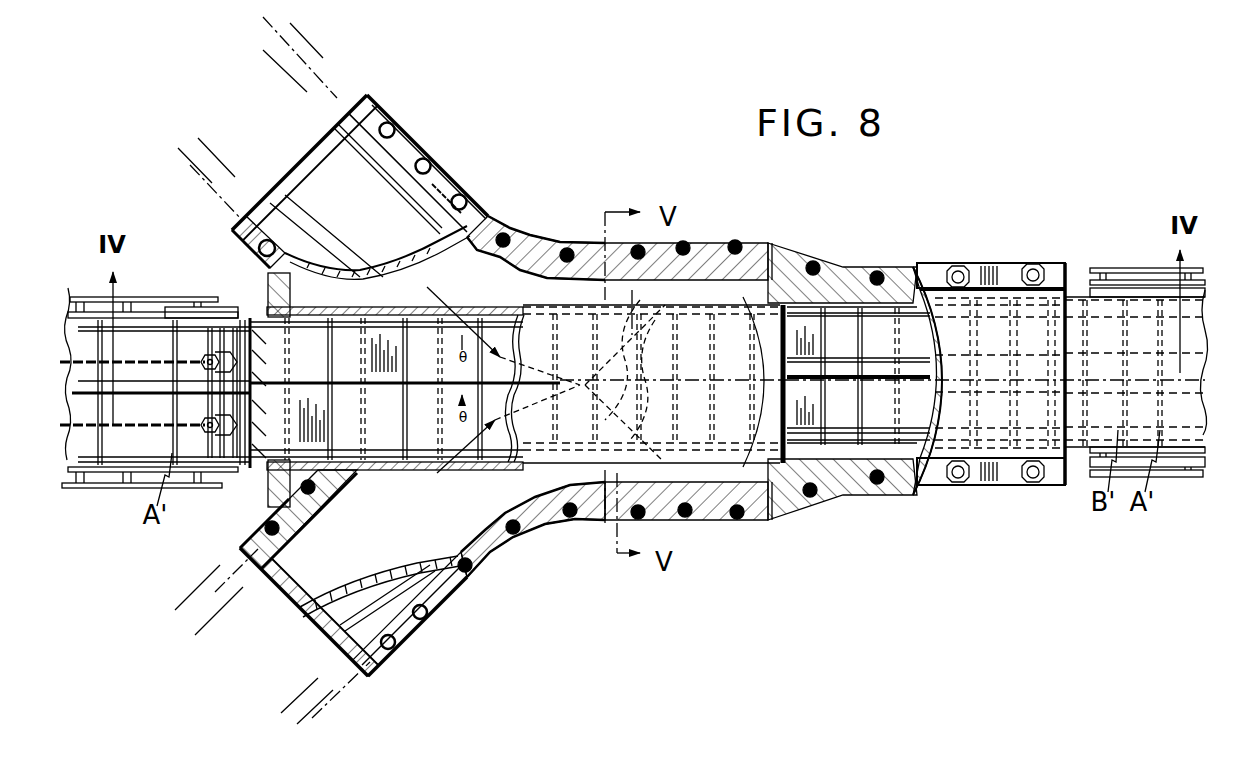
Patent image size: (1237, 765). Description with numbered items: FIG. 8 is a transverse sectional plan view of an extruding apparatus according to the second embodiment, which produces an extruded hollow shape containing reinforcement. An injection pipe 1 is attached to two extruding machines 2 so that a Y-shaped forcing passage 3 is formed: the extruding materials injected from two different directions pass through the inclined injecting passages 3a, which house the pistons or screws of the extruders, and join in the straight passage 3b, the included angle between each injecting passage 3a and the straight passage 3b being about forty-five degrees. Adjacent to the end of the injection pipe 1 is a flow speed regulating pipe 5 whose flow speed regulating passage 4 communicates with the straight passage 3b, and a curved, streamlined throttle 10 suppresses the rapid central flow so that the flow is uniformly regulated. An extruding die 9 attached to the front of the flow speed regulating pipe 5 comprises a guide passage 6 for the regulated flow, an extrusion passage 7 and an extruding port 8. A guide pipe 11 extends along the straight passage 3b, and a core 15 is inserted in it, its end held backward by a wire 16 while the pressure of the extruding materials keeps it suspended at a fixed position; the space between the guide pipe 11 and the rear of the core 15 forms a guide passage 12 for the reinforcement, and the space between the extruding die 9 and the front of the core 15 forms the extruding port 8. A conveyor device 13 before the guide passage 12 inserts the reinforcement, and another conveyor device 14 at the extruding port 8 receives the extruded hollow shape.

The injection pipe 1 is at (523, 236).
The extruding machine 2 is at (330, 65).
The forcing passage 3 is at (475, 228).
The injecting passage 3a is at (397, 160).
The straight passage 3b is at (567, 518).
The flow speed regulating passage 4 is at (740, 245).
The flow speed regulating pipe 5 is at (705, 240).
The guide passage for the regulated flow 6 is at (800, 298).
The extrusion passage 7 is at (910, 447).
The extruding port 8 is at (1068, 296).
The extruding die 9 is at (947, 267).
The throttle 10 is at (692, 522).
The guide pipe 11 is at (512, 535).
The guide passage 12 is at (390, 467).
The conveyor device 13 is at (182, 297).
The conveyor device 14 is at (1135, 268).
The core 15 is at (872, 335).
The wire 16 is at (80, 332).